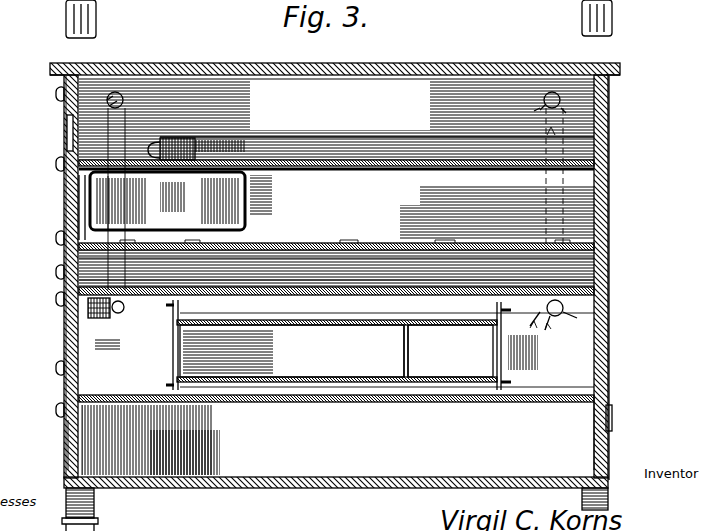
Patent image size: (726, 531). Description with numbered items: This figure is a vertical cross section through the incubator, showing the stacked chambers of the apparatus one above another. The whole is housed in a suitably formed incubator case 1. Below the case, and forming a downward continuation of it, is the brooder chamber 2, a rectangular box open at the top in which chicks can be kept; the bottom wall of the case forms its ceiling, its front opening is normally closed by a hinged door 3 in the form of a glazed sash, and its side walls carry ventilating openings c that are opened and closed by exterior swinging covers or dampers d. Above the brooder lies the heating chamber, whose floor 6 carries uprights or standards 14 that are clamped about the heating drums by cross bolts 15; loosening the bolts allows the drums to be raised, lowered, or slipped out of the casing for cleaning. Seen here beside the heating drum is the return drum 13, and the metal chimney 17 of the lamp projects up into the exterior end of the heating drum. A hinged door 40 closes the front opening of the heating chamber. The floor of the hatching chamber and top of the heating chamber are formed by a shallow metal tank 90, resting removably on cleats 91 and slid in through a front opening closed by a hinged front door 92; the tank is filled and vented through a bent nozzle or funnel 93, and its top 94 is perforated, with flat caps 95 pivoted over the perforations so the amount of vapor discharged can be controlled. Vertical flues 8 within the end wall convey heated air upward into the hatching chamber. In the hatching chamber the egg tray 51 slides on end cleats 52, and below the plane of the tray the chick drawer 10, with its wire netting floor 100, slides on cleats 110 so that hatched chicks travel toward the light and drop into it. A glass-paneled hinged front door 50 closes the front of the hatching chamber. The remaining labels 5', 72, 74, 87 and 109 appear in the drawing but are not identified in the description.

The incubator case 1 is at (604, 226).
The brooder chamber 2 is at (336, 446).
The hinged door 3 is at (66, 432).
The shelf 5' is at (336, 119).
The floor 6 is at (258, 398).
The vertical flues 8 is at (160, 138).
The chick drawer 10 is at (167, 201).
The return drum 13 is at (448, 351).
The uprights 14 is at (504, 360).
The cross bolts 15 is at (386, 315).
The metal chimney 17 is at (98, 358).
The heating chamber door 40 is at (66, 360).
The hinged front door 50 is at (66, 129).
The egg tray 51 is at (372, 160).
The end cleats 52 is at (336, 170).
The compartment 72 is at (292, 351).
The post 74 is at (175, 368).
The roller 87 is at (124, 101).
The metal tank 90 is at (336, 268).
The cleats 91 is at (622, 312).
The hinged front door 92 is at (66, 264).
The bent nozzle 93 is at (336, 257).
The tank top 94 is at (340, 236).
The flat caps 95 is at (362, 244).
The wire netting floor 100 is at (85, 183).
The drawer 109 is at (218, 201).
The cleats 110 is at (267, 195).
The ventilating openings c is at (598, 427).
The swinging covers d is at (612, 412).